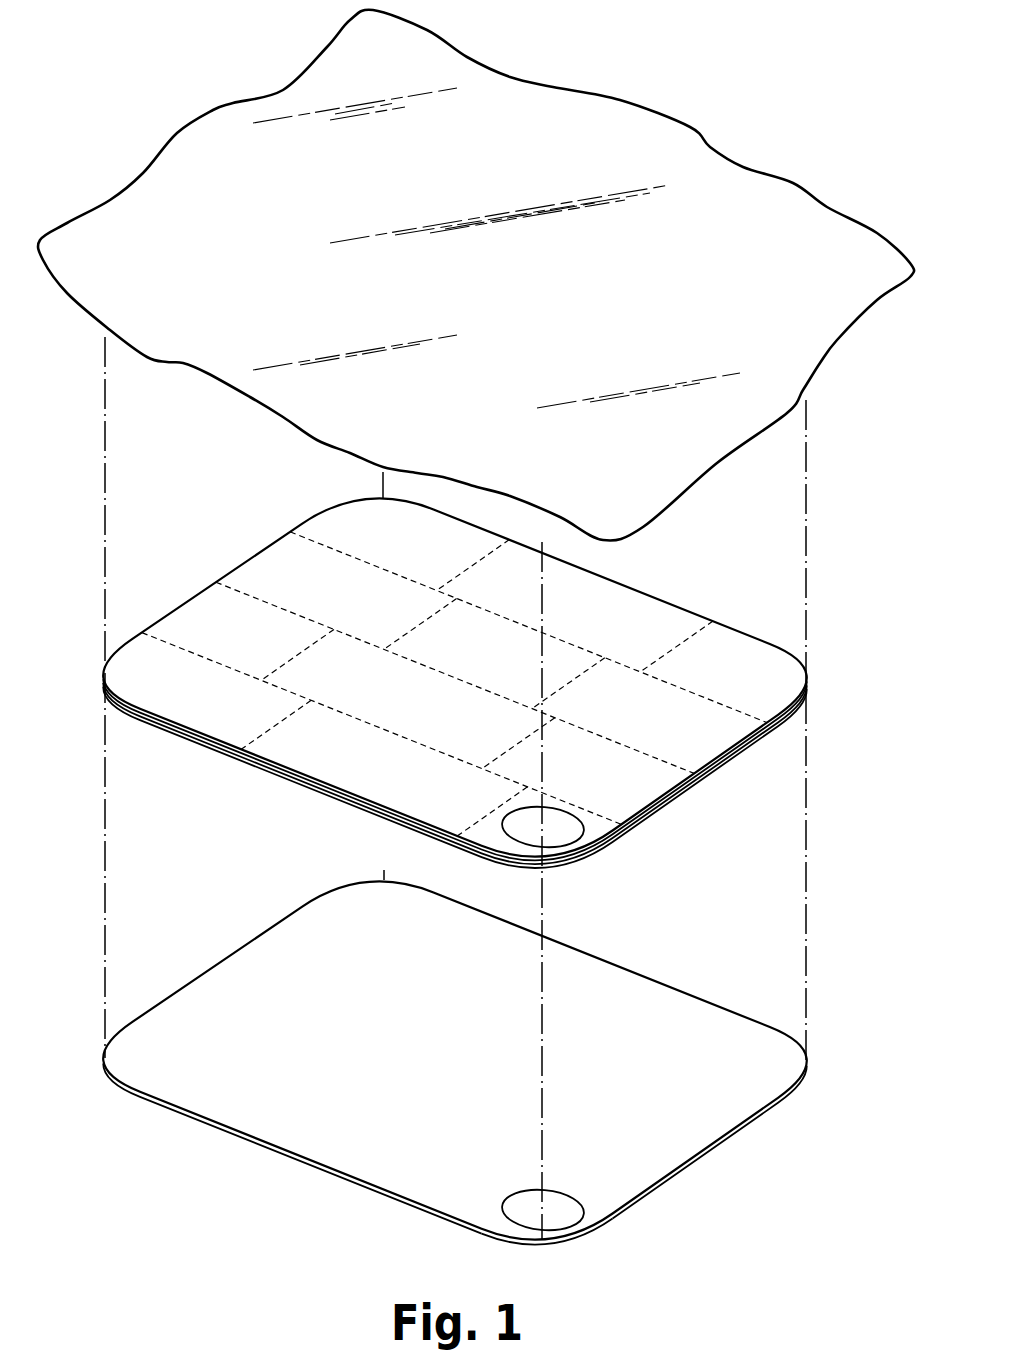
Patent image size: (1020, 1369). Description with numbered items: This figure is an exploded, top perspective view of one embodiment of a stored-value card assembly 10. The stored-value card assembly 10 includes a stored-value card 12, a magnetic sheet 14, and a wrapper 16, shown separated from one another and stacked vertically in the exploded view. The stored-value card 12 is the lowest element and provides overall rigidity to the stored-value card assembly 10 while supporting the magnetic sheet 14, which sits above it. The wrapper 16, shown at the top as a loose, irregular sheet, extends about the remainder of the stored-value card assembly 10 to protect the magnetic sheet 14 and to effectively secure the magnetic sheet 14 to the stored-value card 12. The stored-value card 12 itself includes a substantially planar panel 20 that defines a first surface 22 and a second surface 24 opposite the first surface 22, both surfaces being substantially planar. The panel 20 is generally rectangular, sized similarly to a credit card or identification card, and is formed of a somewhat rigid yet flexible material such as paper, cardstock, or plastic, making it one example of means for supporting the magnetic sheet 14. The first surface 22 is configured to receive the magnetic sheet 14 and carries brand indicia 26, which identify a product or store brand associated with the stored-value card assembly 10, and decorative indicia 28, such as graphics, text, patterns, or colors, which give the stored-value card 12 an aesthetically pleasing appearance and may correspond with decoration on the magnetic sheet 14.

The stored-value card assembly 10 is at (762, 66).
The stored-value card 12 is at (737, 1032).
The magnetic sheet 14 is at (724, 616).
The wrapper 16 is at (525, 112).
The panel 20 is at (338, 1181).
The first surface 22 is at (250, 1135).
The second surface 24 is at (710, 1147).
The brand indicia 26 is at (600, 1226).
The decorative indicia 28 is at (346, 901).